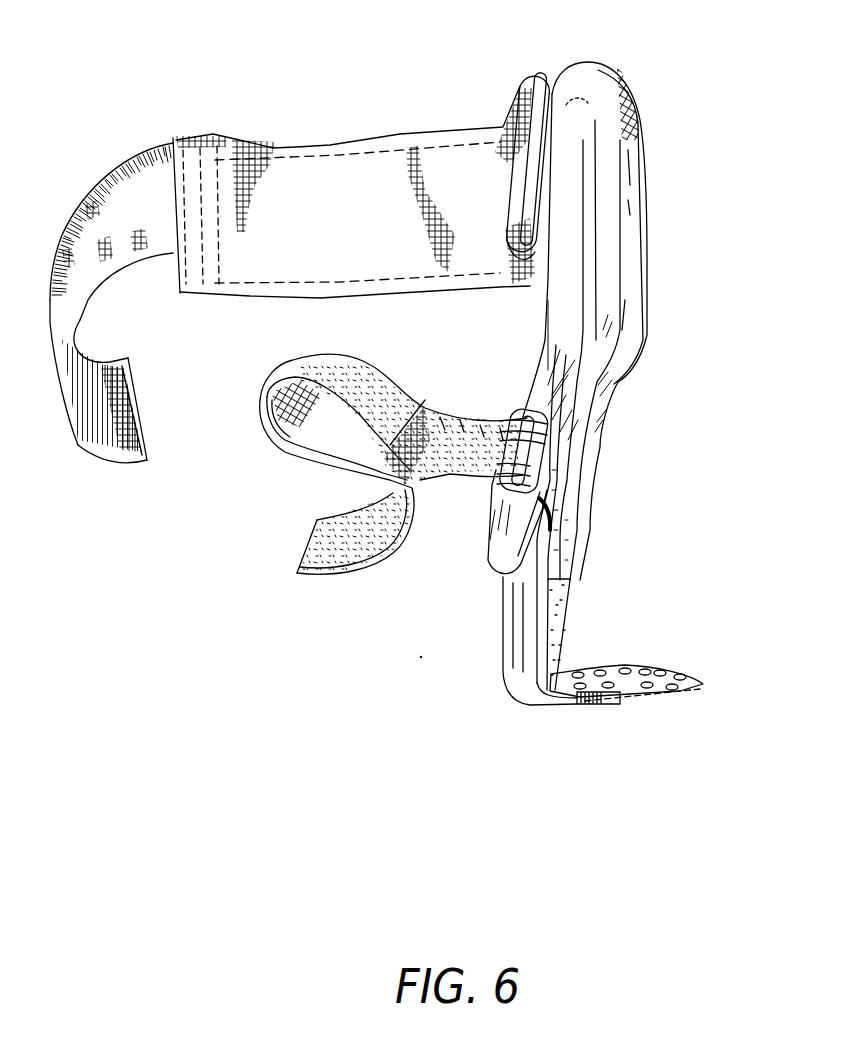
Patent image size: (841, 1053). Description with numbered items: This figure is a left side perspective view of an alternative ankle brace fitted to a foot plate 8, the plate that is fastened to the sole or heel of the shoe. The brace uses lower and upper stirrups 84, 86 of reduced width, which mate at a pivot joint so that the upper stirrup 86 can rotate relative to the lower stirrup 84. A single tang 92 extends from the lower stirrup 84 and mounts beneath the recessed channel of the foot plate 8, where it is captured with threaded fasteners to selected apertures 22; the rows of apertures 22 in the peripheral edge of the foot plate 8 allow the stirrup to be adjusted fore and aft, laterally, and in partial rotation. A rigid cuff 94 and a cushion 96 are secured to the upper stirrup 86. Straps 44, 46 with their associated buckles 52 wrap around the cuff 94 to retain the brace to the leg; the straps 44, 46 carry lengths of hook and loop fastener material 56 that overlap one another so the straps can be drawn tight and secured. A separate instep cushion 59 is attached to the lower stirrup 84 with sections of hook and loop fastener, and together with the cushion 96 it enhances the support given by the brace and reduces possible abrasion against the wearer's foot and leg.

The foot plate 8 is at (645, 654).
The apertures 22 is at (666, 670).
The strap 44 is at (272, 148).
The strap 46 is at (290, 378).
The buckle 52 is at (537, 78).
The hook and loop fastener material 56 is at (92, 352).
The instep cushion 59 is at (563, 615).
The lower stirrup 84 is at (483, 652).
The upper stirrup 86 is at (578, 487).
The tang 92 is at (581, 706).
The cuff 94 is at (536, 317).
The cushion 96 is at (648, 306).